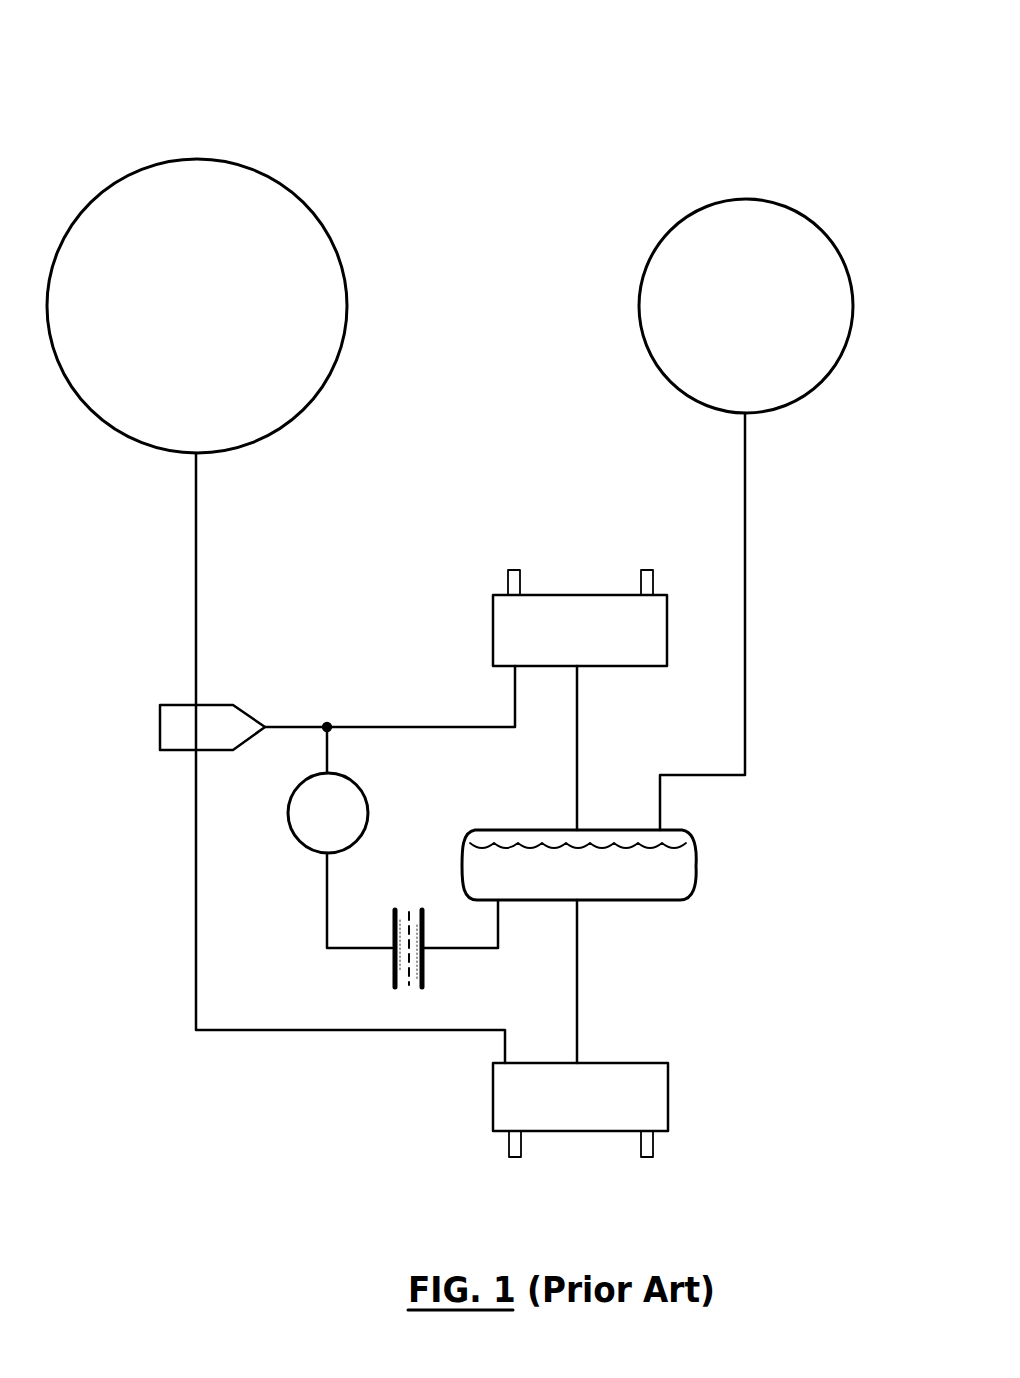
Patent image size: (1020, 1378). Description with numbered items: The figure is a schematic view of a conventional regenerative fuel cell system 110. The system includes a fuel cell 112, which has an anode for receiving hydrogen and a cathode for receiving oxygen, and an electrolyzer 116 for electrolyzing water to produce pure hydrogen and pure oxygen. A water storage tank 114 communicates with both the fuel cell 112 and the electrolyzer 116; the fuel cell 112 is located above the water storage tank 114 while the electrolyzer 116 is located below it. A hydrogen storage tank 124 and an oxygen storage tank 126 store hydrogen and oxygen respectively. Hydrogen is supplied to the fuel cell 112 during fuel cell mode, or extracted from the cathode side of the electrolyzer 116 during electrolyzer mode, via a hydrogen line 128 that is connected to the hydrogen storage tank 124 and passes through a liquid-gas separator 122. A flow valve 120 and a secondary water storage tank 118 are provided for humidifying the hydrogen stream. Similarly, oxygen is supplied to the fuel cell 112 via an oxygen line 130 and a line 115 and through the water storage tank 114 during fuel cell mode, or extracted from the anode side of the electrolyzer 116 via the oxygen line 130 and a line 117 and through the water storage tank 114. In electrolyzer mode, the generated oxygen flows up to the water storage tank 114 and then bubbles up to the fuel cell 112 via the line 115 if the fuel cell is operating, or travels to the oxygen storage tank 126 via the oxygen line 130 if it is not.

The electrolysis system (prior art) 110 is at (489, 100).
The fuel cell 112 is at (580, 595).
The water storage tank 114 is at (696, 860).
The line 115 is at (578, 731).
The electrolyzer 116 is at (640, 1063).
The line 117 is at (578, 960).
The secondary water storage tank 118 is at (357, 785).
The flow valve 120 is at (425, 965).
The liquid-gas separator 122 is at (175, 704).
The hydrogen storage tank 124 is at (280, 181).
The oxygen storage tank 126 is at (697, 208).
The hydrogen line 128 is at (196, 549).
The oxygen line 130 is at (745, 585).